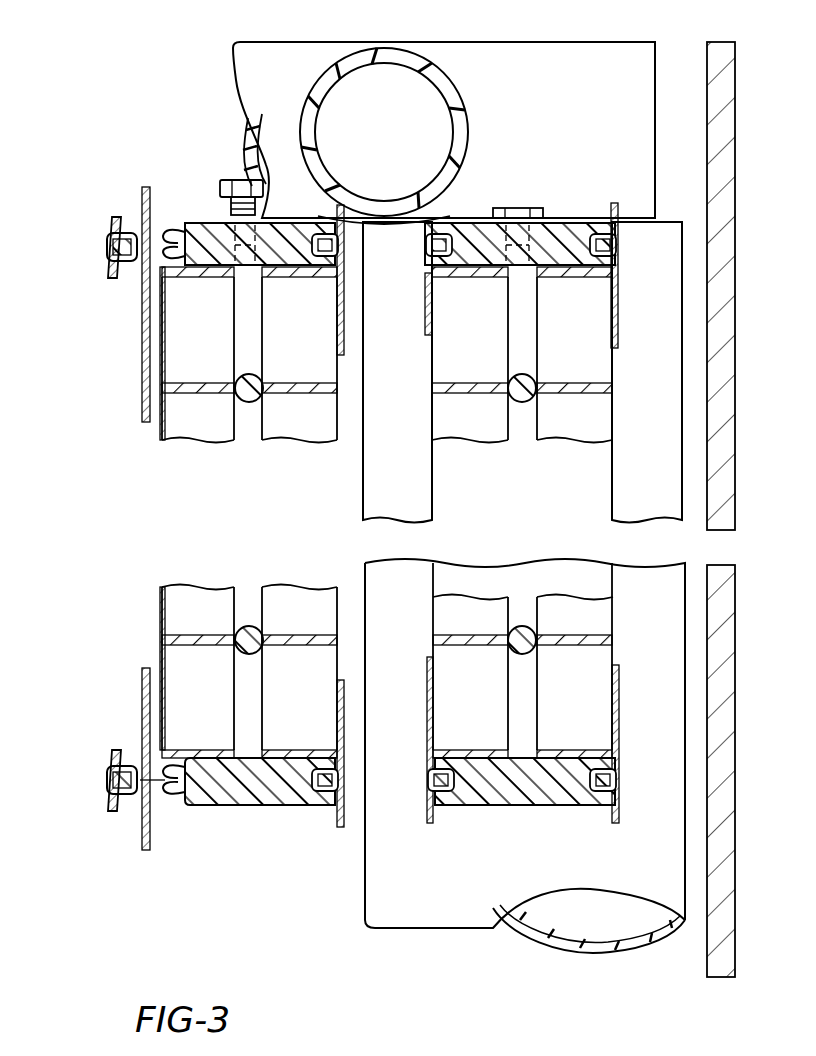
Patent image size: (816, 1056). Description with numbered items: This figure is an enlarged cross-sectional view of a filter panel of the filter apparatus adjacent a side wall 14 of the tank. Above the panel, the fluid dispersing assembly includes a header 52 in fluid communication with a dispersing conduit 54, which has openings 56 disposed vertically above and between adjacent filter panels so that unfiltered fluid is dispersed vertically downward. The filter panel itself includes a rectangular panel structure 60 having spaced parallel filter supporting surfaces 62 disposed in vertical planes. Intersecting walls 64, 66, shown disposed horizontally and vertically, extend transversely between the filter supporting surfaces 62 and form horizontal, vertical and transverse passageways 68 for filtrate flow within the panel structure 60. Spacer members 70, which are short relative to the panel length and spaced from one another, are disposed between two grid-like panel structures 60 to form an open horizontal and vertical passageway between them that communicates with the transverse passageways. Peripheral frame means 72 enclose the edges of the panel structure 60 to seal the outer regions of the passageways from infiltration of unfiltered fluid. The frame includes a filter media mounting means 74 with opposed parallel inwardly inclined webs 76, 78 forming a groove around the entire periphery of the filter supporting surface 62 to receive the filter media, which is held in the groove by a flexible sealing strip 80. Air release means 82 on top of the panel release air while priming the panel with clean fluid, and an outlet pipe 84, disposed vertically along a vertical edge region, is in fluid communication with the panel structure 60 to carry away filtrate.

The side wall 14 is at (740, 398).
The header 52 is at (592, 42).
The dispersing conduit 54 is at (462, 127).
The openings 56 is at (385, 214).
The rectangular panel structure 60 is at (192, 445).
The filter supporting surface 62 is at (160, 428).
The intersecting wall 64 is at (572, 361).
The intersecting wall 66 is at (214, 385).
The passageway 68 is at (250, 690).
The spacer member 70 is at (252, 402).
The peripheral frame means 72 is at (215, 222).
The filter media mounting means 74 is at (342, 805).
The inwardly inclined web 76 is at (152, 240).
The inwardly inclined web 78 is at (163, 262).
The flexible sealing strip 80 is at (165, 246).
The air release means 82 is at (222, 182).
The outlet pipe 84 is at (441, 926).